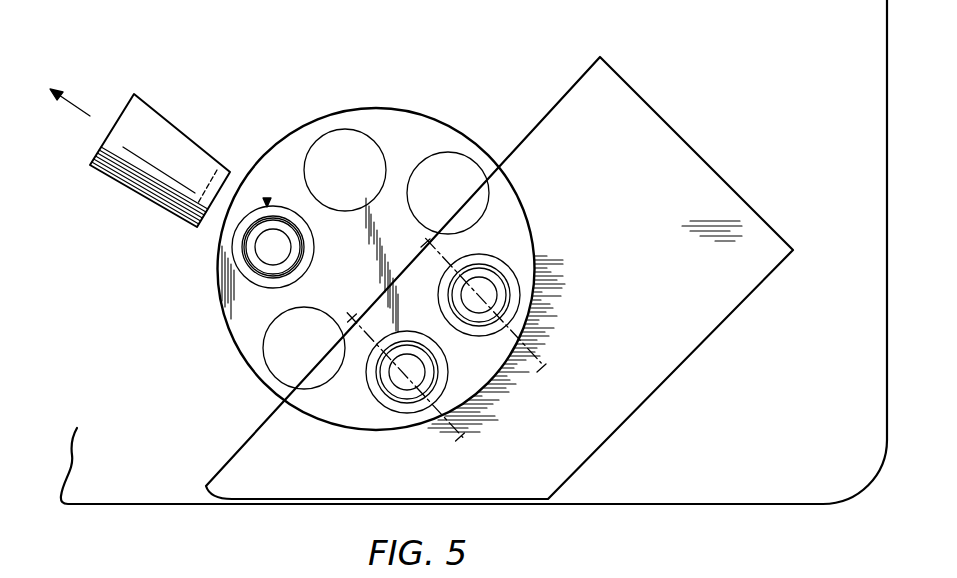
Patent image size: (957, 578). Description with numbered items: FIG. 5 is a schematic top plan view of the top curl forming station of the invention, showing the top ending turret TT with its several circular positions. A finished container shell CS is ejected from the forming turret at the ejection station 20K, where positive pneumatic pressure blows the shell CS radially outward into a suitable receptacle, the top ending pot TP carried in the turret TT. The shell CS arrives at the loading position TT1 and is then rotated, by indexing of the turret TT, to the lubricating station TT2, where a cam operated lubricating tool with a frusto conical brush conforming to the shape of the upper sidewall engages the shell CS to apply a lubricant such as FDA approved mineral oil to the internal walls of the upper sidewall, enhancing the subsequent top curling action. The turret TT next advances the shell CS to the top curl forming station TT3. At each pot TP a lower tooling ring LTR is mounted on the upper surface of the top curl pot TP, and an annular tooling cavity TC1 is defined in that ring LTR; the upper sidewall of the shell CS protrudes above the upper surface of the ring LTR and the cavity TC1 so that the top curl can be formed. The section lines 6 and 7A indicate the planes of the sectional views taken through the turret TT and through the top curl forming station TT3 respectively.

The top ending turret TT is at (351, 270).
The loading position TT1 is at (197, 266).
The lubricating station TT2 is at (399, 479).
The top curl forming station TT3 is at (619, 302).
The annular tooling cavity TC1 is at (292, 283).
The lower tooling ring LTR is at (292, 206).
The top ending pot TP is at (267, 199).
The container shell CS is at (167, 135).
The ejection station 20K is at (86, 89).
The section line 6- 6 is at (355, 322).
The section line 7A- 7A is at (430, 238).